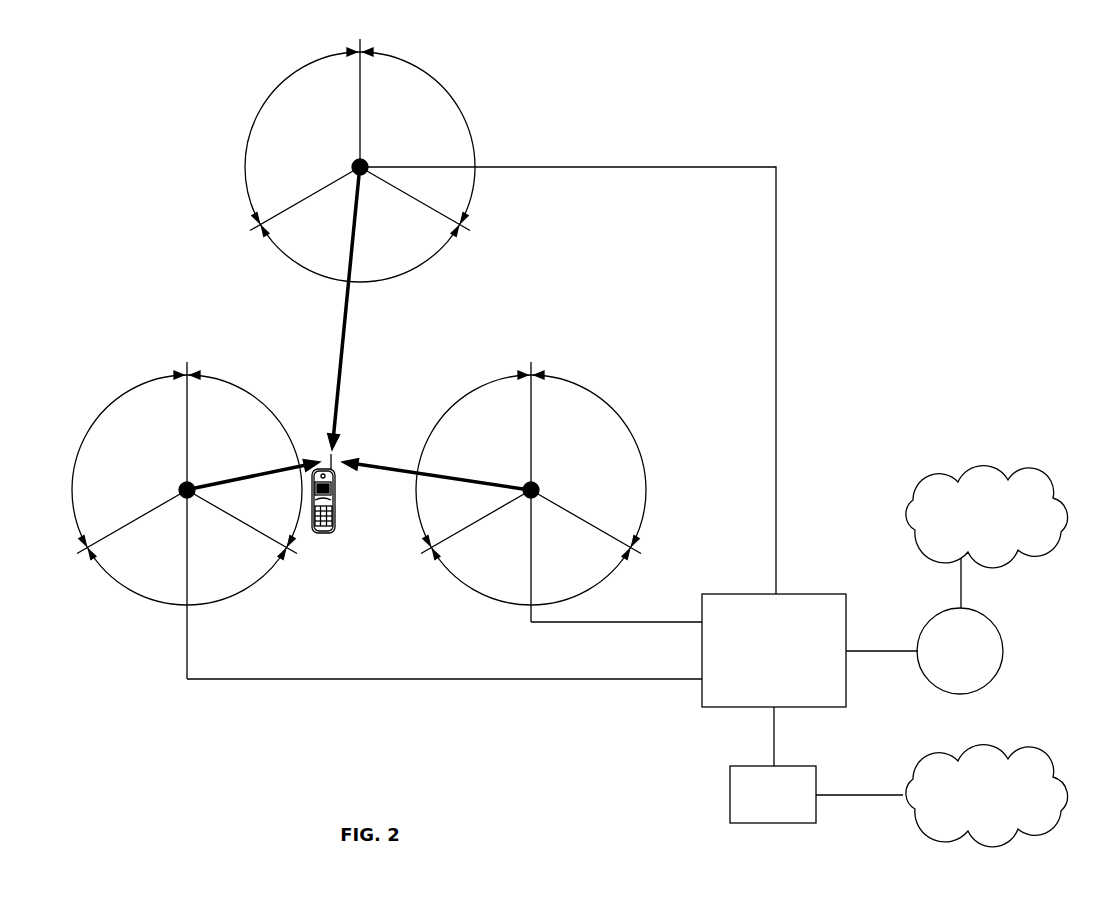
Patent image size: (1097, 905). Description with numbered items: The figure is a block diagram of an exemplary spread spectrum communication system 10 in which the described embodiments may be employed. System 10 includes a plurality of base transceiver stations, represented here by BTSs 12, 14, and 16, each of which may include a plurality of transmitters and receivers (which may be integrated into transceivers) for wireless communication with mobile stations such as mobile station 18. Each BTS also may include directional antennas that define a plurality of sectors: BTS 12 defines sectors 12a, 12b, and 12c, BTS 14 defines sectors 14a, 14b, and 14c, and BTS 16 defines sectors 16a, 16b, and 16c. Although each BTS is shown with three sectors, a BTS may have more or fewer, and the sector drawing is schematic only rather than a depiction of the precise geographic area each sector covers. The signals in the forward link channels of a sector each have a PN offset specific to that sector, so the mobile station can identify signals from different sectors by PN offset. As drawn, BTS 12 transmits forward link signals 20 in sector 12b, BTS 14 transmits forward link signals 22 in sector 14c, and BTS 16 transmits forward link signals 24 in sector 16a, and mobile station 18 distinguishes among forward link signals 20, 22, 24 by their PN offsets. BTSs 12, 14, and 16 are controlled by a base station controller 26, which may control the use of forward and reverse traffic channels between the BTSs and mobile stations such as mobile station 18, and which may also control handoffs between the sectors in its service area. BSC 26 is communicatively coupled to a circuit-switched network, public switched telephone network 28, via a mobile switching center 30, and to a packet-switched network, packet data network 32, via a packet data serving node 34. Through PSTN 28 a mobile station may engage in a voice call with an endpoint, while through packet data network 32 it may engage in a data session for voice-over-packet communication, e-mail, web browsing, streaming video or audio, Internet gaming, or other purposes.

The spread spectrum communication system 10 is at (134, 787).
The base transceiver station 12 is at (187, 520).
The sector 12a is at (129, 459).
The sector 12b is at (244, 459).
The sector 12c is at (186, 571).
The base transceiver station 14 is at (360, 160).
The sector 14a is at (302, 136).
The sector 14b is at (417, 136).
The sector 14c is at (359, 251).
The base transceiver station 16 is at (531, 492).
The sector 16a is at (473, 459).
The sector 16b is at (588, 459).
The sector 16c is at (530, 575).
The mobile station 18 is at (336, 503).
The forward link signals 20 is at (233, 486).
The forward link signals 22 is at (333, 400).
The forward link signals 24 is at (407, 467).
The base station controller 26 is at (818, 593).
The public switched telephone network 28 is at (1015, 470).
The mobile switching center 30 is at (1004, 651).
The packet data network 32 is at (1015, 750).
The packet data serving node 34 is at (730, 795).